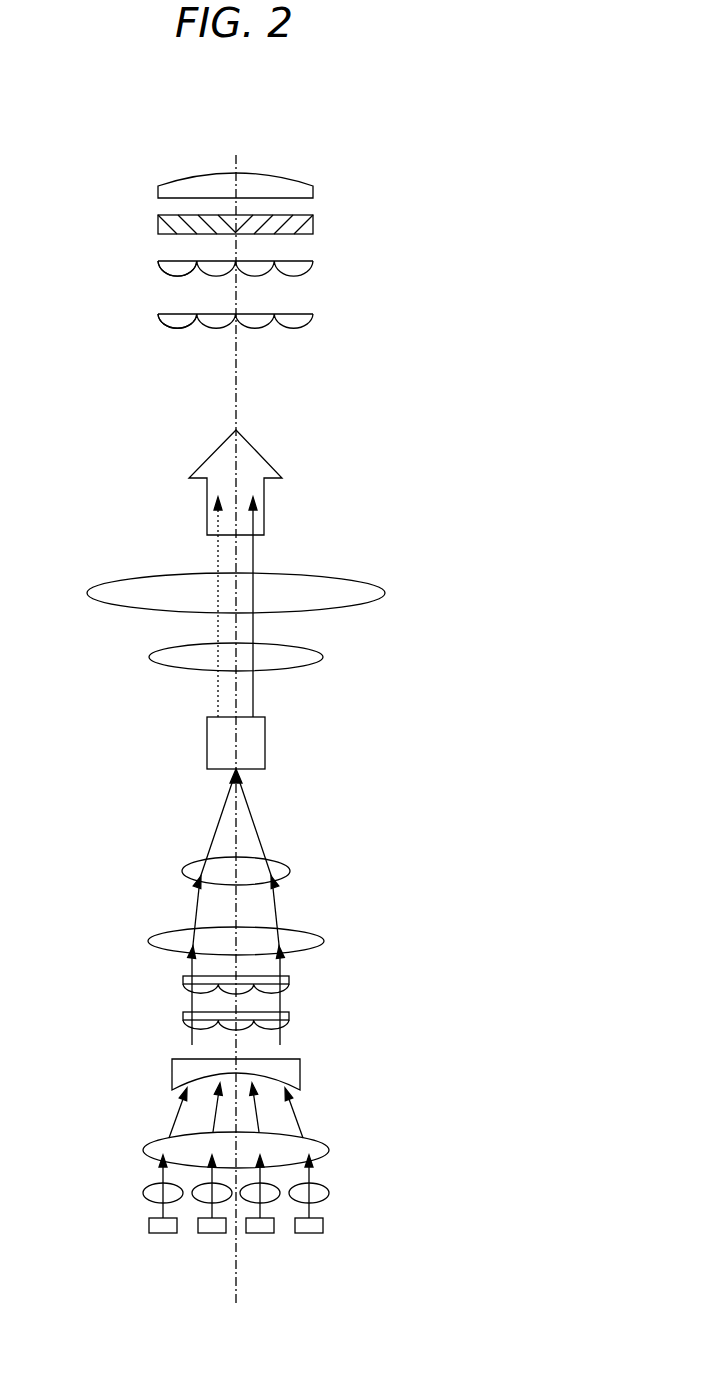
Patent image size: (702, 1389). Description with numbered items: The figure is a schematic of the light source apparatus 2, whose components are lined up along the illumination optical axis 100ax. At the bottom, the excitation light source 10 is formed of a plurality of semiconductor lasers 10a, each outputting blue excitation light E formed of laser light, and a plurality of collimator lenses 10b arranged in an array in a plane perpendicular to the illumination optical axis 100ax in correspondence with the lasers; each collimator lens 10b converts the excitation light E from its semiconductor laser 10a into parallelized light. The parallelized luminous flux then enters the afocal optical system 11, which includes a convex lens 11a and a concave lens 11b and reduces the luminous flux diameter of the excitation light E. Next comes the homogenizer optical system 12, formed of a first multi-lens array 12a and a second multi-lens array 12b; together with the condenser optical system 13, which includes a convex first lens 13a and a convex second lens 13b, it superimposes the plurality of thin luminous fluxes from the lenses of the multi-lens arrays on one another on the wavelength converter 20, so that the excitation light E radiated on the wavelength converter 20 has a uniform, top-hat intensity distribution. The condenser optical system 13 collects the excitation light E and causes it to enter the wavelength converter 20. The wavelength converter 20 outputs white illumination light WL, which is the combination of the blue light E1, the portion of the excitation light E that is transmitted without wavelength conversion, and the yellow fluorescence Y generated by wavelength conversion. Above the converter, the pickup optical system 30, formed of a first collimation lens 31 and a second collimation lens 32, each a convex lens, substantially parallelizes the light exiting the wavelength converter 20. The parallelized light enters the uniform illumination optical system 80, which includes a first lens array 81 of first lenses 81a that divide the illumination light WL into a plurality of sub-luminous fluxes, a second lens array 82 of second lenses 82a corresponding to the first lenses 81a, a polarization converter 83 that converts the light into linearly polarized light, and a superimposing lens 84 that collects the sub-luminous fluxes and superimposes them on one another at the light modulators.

The light source apparatus 2 is at (500, 150).
The excitation light source 10 is at (454, 1162).
The semiconductor laser 10a is at (313, 1222).
The collimator lens 10b is at (313, 1181).
The afocal optical system 11 is at (454, 1063).
The convex lens 11a is at (313, 1140).
The concave lens 11b is at (300, 1070).
The homogenizer optical system 12 is at (454, 958).
The first multi-lens array 12a is at (289, 1027).
The second multi-lens array 12b is at (289, 991).
The condenser optical system 13 is at (454, 853).
The first lens 13a is at (322, 936).
The second lens 13b is at (290, 865).
The wavelength converter 20 is at (207, 740).
The pickup optical system 30 is at (461, 632).
The first collimation lens 31 is at (312, 668).
The second collimation lens 32 is at (317, 614).
The uniform illumination optical system 80 is at (391, 163).
The first lens array 81 is at (313, 326).
The first lens 81a is at (175, 323).
The second lens array 82 is at (313, 273).
The second lens 82a is at (175, 270).
The polarization converter 83 is at (313, 221).
The superimposing lens 84 is at (313, 180).
The illumination optical axis 100ax is at (236, 375).
The excitation light E is at (260, 837).
The blue light E1 is at (213, 560).
The yellow fluorescence Y is at (255, 560).
The illumination light WL is at (245, 457).